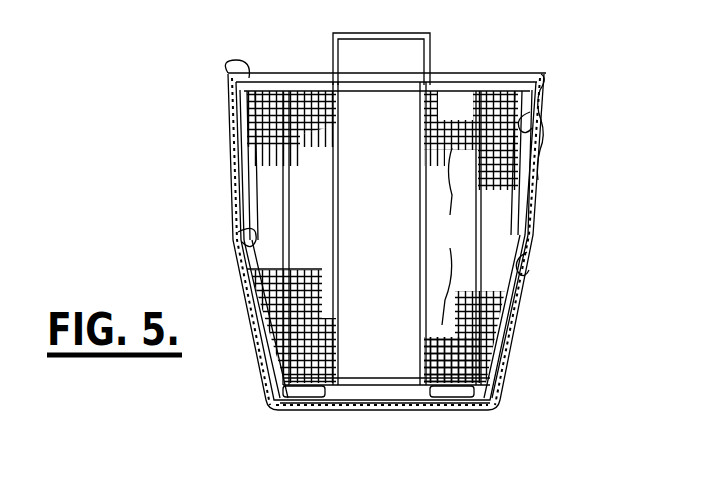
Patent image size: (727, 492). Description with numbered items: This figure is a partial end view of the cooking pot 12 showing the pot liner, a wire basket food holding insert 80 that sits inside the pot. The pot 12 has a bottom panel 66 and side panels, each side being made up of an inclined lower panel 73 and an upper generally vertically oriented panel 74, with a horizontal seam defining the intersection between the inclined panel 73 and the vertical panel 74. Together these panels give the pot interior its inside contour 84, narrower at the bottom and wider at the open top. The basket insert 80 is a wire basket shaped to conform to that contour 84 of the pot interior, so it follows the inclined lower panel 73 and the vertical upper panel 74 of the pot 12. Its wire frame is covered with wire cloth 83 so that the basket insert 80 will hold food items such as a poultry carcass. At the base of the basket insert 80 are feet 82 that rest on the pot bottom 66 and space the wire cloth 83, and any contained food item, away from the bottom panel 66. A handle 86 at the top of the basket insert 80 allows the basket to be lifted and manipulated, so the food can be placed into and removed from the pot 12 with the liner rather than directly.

The pot 12 is at (236, 184).
The bottom panel 66 is at (401, 411).
The inclined lower panel 73 is at (257, 352).
The upper generally vertically oriented panel 74 is at (238, 138).
The liner (basket insert) 80 is at (502, 86).
The feet 82 is at (308, 402).
The wire cloth 83 is at (401, 233).
The contour of the pot interior 84 is at (245, 82).
The handle 86 is at (411, 33).